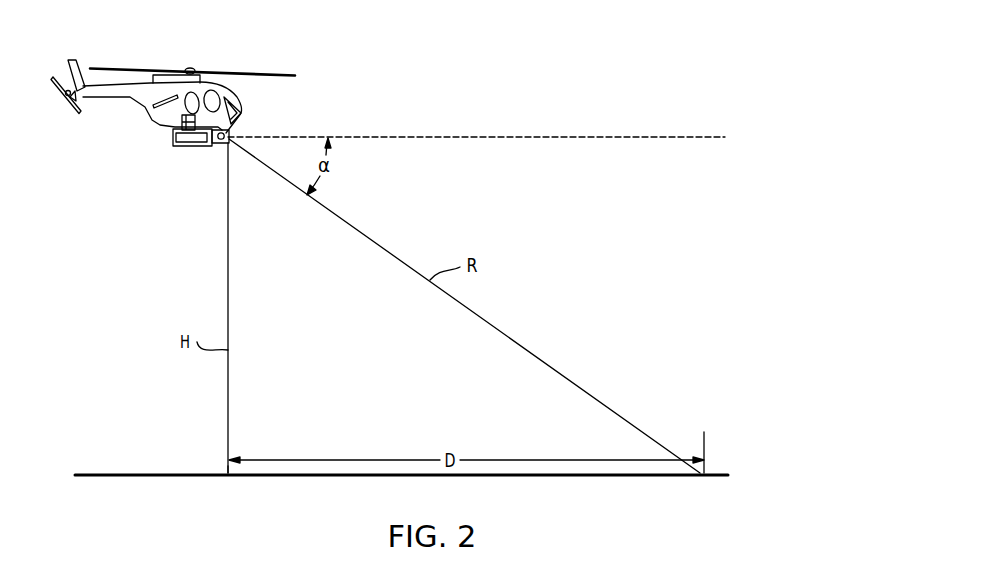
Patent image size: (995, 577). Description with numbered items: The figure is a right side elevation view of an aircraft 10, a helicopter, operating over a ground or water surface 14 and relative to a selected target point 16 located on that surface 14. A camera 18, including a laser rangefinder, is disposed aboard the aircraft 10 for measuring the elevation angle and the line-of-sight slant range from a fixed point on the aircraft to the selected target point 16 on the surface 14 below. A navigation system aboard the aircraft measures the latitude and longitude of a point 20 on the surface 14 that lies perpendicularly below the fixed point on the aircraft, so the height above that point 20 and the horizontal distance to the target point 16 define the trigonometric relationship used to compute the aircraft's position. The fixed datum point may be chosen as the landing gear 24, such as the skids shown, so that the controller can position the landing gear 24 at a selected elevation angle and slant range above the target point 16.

The aircraft 10 is at (173, 131).
The ground or water surface 14 is at (110, 473).
The selected target point 16 is at (687, 451).
The camera 18 is at (234, 132).
The point on the surface perpendicularly below the fixed point 20 is at (223, 473).
The landing gear 24 is at (188, 147).